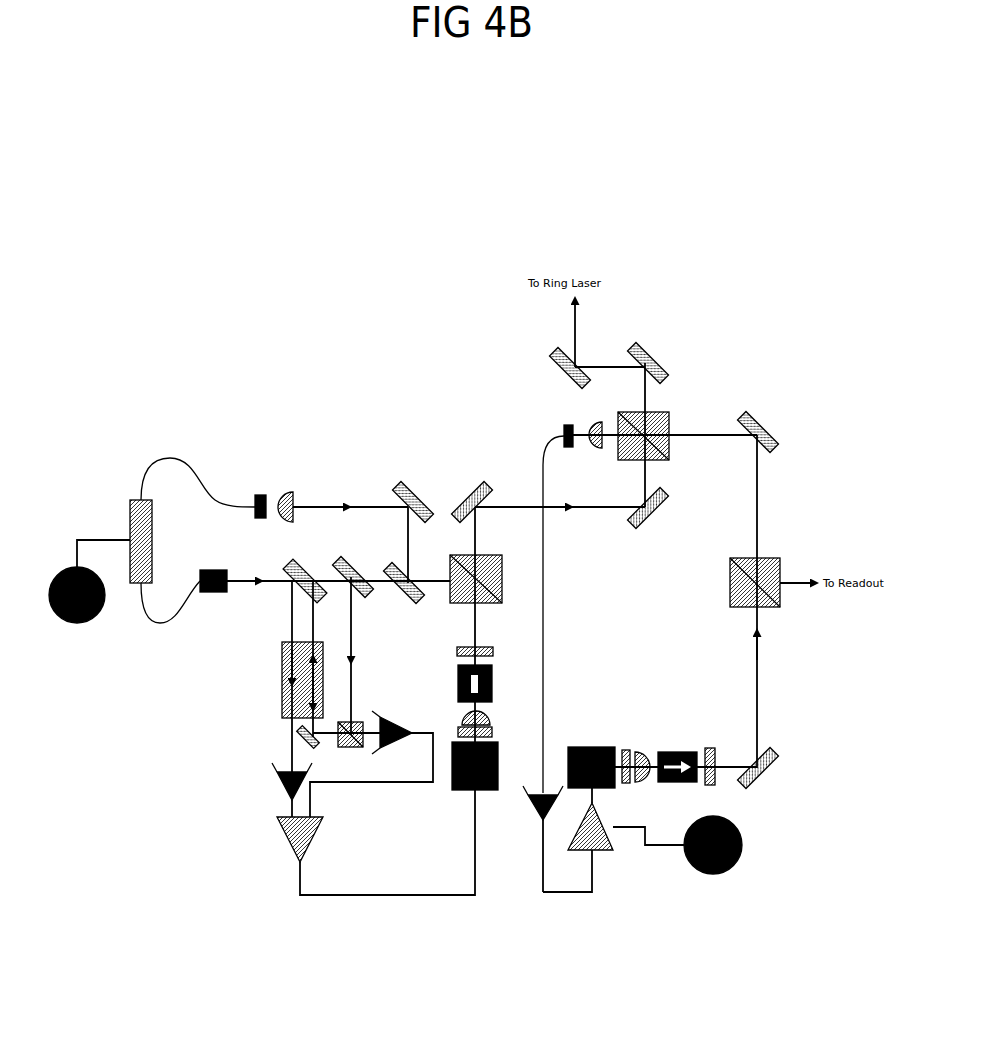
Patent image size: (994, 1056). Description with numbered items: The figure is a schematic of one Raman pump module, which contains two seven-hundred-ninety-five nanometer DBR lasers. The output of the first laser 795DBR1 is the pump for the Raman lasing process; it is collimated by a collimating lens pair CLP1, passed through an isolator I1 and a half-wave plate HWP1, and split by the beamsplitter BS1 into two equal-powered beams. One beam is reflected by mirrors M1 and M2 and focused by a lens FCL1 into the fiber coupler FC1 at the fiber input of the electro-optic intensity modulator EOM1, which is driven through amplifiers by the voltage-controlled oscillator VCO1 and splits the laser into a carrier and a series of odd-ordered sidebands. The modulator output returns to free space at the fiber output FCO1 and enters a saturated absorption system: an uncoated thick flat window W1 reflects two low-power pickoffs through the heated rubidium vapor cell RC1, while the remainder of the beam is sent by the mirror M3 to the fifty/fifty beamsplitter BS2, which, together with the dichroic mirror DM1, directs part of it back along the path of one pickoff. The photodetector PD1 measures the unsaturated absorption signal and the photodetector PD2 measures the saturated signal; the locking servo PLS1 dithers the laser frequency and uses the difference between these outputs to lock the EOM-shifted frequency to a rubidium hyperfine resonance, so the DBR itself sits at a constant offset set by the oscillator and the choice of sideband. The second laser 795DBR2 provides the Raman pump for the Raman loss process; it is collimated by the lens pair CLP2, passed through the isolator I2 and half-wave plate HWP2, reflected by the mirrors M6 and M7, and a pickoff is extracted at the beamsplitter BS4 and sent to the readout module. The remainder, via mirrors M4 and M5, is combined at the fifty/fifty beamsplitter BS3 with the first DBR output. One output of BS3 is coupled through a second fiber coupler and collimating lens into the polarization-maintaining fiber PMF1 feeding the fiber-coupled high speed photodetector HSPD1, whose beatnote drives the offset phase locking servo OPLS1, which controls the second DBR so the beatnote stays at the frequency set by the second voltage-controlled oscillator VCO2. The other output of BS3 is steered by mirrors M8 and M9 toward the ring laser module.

The voltage-controlled oscillator VCO1 is at (77, 605).
The electro-optic intensity modulator EOM1 is at (162, 541).
The fiber coupler 1 FC1 is at (261, 496).
The fiber collimating lens 1 FCL1 is at (294, 498).
The fiber coupler output 1 FCO1 is at (214, 591).
The uncoated thick flat window W1 is at (305, 571).
The mirror 1 M1 is at (403, 590).
The mirror 2 M2 is at (412, 497).
The mirror 3 M3 is at (356, 585).
The mirror 4 M4 is at (471, 497).
The mirror 5 M5 is at (647, 512).
The mirror 6 M6 is at (757, 772).
The mirror 7 M7 is at (758, 432).
The mirror 8 M8 is at (651, 362).
The mirror 9 M9 is at (567, 367).
The beamsplitter BS1 is at (479, 589).
The 50/50 beamsplitter BS2 is at (350, 743).
The 50/50 beamsplitter BS3 is at (657, 434).
The pickoff beamsplitter BS4 is at (737, 585).
The half wave plate 1 HWP1 is at (451, 652).
The half wave plate 2 HWP2 is at (715, 757).
The isolator 1 I1 is at (484, 683).
The isolator 2 I2 is at (677, 755).
The collimating lens pair 1 CLP1 is at (494, 724).
The collimating lens pair 2 CLP2 is at (635, 756).
The 795 nm DBR laser 795DBR1 is at (455, 775).
The 795 nm DBR laser 795DBR2 is at (585, 758).
The heated rubidium vapor cell RC1 is at (289, 680).
The dichroic mirror 1 DM1 is at (313, 745).
The photodetector PD1 is at (282, 781).
The photodetector PD2 is at (394, 727).
The locking servo PLS1 is at (314, 839).
The optical phase lock servo 1 OPLS1 is at (603, 838).
The polarization maintaining fiber 1 PMF1 is at (563, 614).
The fiber-coupled high speed photodetector HSPD1 is at (526, 806).
The second voltage-controlled oscillator VCO2 is at (713, 855).